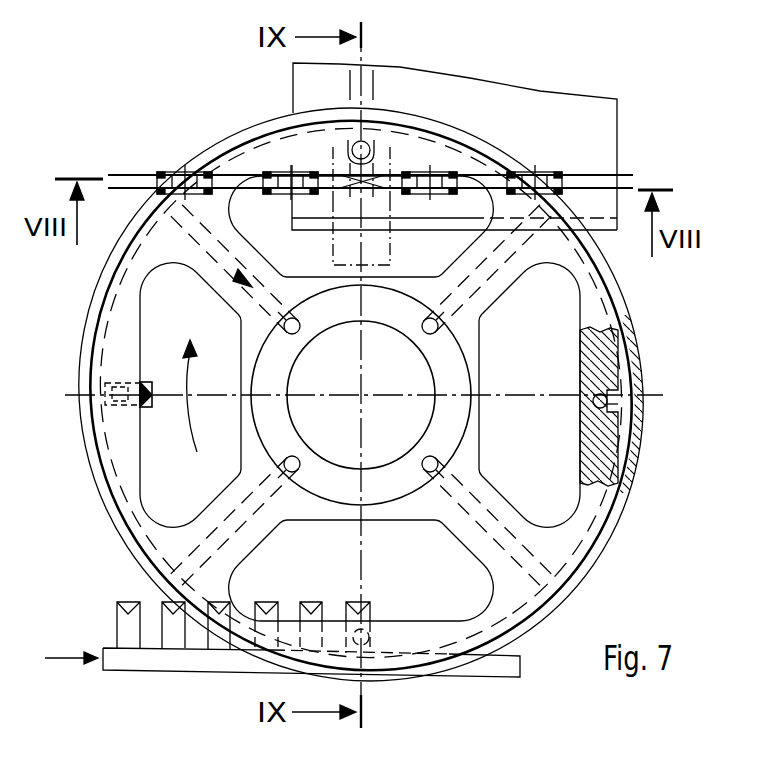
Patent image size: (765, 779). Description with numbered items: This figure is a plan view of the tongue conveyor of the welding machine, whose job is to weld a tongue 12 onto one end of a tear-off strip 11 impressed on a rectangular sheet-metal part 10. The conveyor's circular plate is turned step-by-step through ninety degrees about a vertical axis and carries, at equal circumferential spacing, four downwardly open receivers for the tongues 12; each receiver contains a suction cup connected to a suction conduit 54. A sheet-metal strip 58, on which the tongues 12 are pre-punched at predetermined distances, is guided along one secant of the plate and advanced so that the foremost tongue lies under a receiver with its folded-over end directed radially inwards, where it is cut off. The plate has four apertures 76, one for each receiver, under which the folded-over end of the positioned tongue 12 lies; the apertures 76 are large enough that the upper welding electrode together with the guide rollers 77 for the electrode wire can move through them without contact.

The sheet-metal part 10 is at (562, 112).
The tear-off strip 11 is at (368, 68).
The tongue 12 is at (372, 160).
The suction conduit 54 is at (620, 352).
The sheet-metal strip 58 is at (127, 660).
The aperture 76 is at (190, 320).
The guide rollers 77 is at (262, 172).